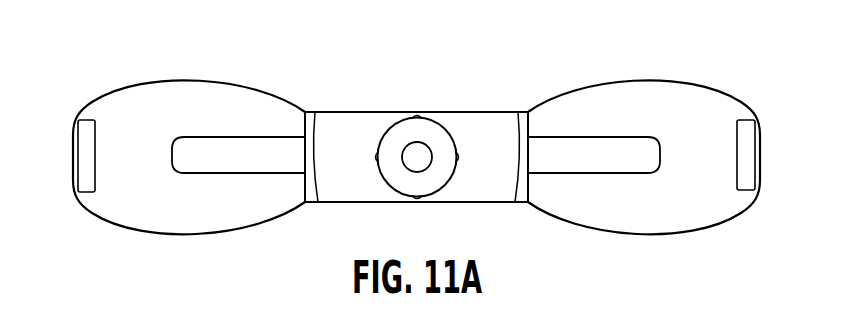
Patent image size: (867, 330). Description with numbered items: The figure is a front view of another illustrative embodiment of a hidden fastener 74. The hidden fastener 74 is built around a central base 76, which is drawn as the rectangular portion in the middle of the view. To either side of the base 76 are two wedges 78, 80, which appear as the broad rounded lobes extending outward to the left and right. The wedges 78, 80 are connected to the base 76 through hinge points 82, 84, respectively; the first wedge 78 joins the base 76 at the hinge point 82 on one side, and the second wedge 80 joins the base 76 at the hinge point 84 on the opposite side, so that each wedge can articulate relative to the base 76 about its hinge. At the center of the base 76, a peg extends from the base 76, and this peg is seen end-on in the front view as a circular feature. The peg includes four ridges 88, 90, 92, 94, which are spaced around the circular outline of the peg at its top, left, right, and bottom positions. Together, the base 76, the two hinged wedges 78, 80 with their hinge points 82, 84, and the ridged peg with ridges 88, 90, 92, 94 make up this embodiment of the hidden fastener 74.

The hidden fastener 74 is at (452, 97).
The base 76 is at (345, 130).
The wedge 78 is at (233, 203).
The wedge 80 is at (653, 215).
The hinge point 82 is at (311, 200).
The hinge point 84 is at (522, 196).
The ridge 88 is at (411, 116).
The ridge 90 is at (377, 163).
The ridge 92 is at (457, 163).
The ridge 94 is at (418, 200).